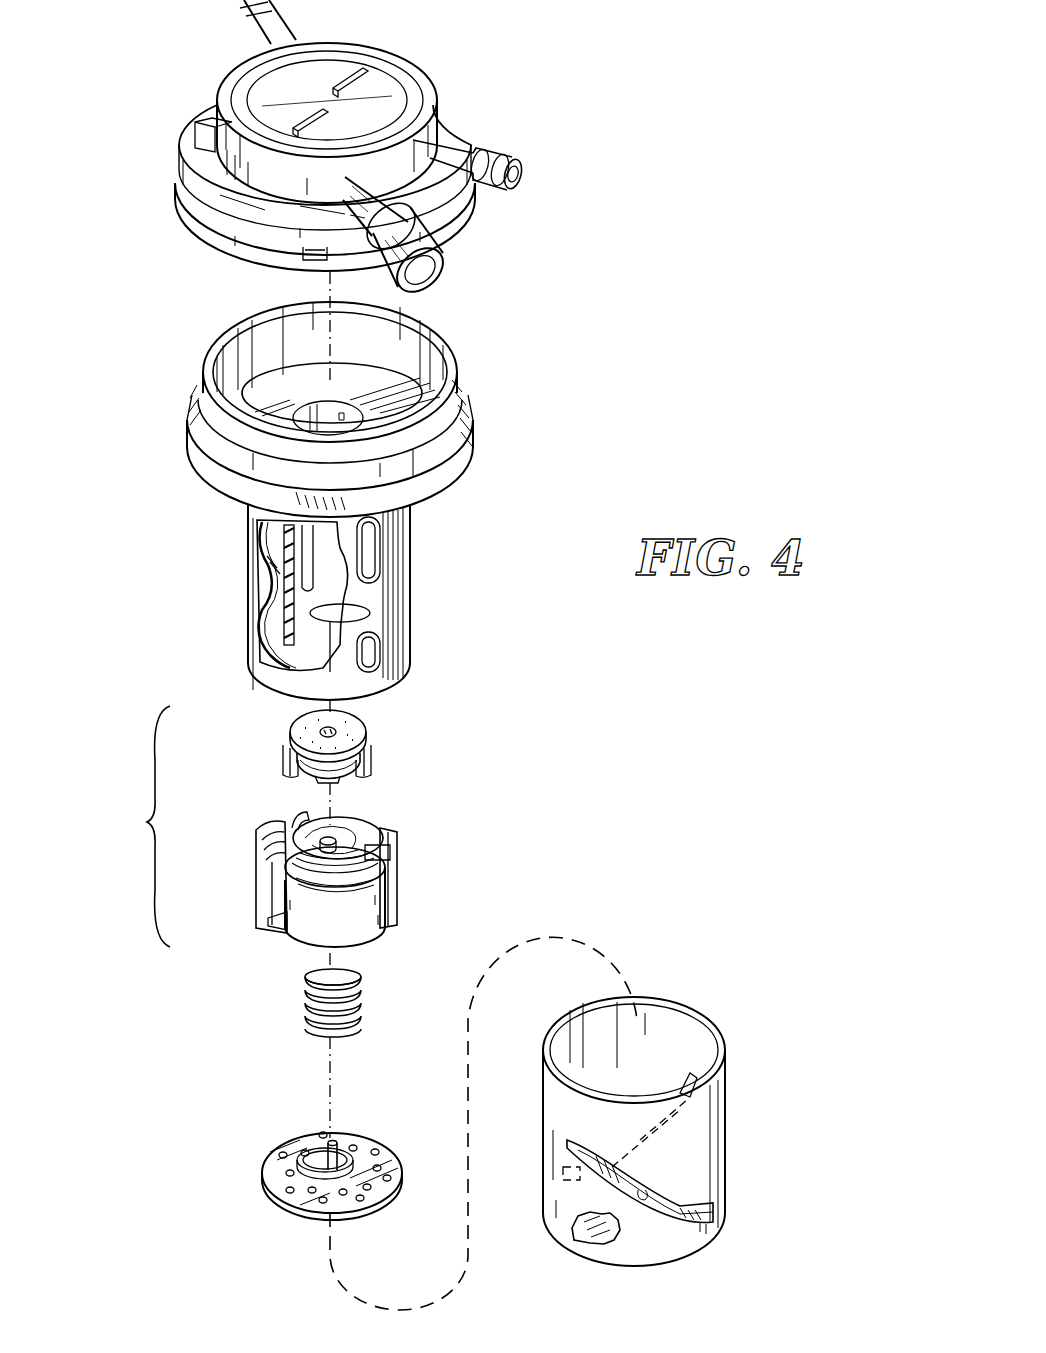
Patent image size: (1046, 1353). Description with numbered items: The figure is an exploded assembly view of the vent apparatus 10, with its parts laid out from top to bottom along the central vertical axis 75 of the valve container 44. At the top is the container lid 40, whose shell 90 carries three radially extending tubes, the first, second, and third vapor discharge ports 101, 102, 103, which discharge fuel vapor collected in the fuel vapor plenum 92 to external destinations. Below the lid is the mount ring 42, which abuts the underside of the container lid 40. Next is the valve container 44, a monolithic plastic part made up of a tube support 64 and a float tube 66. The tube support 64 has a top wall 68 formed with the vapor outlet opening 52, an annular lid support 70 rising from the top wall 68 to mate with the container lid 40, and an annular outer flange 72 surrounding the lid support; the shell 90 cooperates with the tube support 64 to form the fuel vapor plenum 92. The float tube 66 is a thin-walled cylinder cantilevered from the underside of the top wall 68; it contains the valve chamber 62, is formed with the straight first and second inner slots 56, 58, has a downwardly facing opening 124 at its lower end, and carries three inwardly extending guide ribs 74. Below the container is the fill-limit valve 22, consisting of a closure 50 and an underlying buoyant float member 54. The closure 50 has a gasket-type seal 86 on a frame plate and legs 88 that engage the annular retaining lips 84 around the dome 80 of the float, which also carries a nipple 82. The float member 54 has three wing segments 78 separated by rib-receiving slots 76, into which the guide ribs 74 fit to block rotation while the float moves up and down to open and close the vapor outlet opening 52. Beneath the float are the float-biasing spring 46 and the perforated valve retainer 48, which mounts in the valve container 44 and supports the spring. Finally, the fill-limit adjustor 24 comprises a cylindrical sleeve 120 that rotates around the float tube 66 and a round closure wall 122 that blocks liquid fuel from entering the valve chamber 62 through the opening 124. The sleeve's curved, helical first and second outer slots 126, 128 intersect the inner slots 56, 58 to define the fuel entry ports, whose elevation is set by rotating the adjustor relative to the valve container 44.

The vent apparatus 10 is at (604, 131).
The fill-limit valve 22 is at (142, 826).
The fill-limit adjustor 24 is at (732, 1100).
The container lid 40 is at (222, 80).
The mount ring 42 is at (233, 263).
The valve container 44 is at (214, 509).
The float-biasing spring 46 is at (298, 1011).
The valve retainer 48 is at (270, 1200).
The closure 50 is at (277, 764).
The vapor outlet opening 52 is at (350, 417).
The float member 54 is at (245, 898).
The first inner slot 56 is at (372, 646).
The second inner slot 58 is at (280, 578).
The valve chamber 62 is at (310, 642).
The tube support 64 is at (477, 404).
The float tube 66 is at (416, 588).
The top wall 68 is at (380, 372).
The annular lid support 70 is at (468, 372).
The annular outer flange 72 is at (443, 470).
The guide ribs 74 is at (302, 542).
The central vertical axis 75 is at (327, 288).
The rib-receiving slots 76 is at (305, 819).
The wing segments 78 is at (396, 835).
The dome 80 is at (346, 840).
The nipple 82 is at (335, 838).
The annular retaining lips 84 is at (300, 842).
The seal 86 is at (345, 727).
The legs 88 is at (292, 752).
The shell 90 is at (438, 75).
The fuel vapor plenum 92 is at (276, 340).
The first vapor discharge port 101 is at (452, 258).
The second vapor discharge port 102 is at (298, 22).
The third vapor discharge port 103 is at (502, 151).
The cylindrical sleeve 120 is at (712, 1168).
The closure wall 122 is at (604, 1237).
The downwardly facing opening 124 is at (332, 625).
The first outer slot 126 is at (641, 1196).
The second outer slot 128 is at (640, 1138).